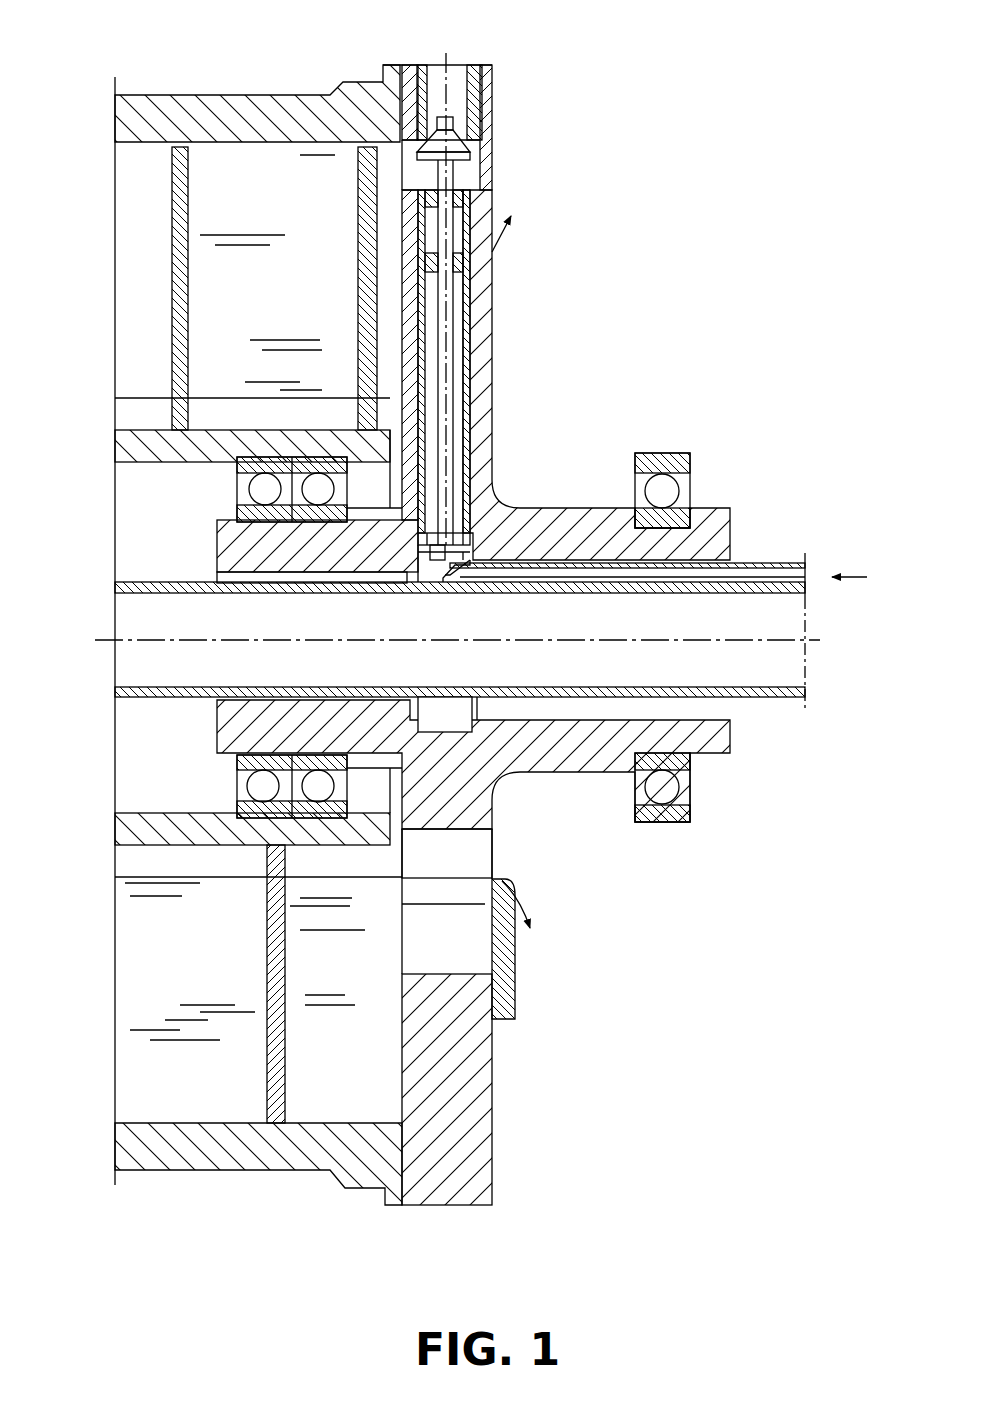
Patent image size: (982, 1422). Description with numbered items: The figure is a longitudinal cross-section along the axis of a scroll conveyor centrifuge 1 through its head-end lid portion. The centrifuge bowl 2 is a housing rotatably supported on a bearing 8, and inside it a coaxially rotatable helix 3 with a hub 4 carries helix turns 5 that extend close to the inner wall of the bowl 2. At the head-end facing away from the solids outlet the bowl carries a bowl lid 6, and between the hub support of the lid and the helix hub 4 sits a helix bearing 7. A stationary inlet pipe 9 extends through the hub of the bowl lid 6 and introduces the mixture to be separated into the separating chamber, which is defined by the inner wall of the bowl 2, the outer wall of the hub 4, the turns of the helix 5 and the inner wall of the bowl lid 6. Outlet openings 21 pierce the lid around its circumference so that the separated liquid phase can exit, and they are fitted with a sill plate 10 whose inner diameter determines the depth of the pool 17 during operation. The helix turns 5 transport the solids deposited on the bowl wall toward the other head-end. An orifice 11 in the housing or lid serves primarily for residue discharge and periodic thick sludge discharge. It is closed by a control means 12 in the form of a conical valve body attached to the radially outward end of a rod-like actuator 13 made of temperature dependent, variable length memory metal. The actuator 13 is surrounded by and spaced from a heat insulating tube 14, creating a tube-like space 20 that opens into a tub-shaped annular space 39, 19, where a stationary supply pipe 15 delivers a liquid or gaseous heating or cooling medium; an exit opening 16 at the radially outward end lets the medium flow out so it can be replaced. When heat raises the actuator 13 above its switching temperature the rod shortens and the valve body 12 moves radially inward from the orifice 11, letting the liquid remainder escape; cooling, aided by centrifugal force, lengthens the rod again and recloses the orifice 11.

The scroll conveyor centrifuge 1 is at (621, 314).
The centrifuge bowl 2 is at (232, 108).
The helix 3 is at (146, 292).
The hub 4 is at (145, 443).
The helix turns 5 is at (178, 333).
The bowl lid 6 is at (483, 412).
The helix bearing 7 is at (237, 475).
The bearing 8 is at (692, 465).
The inlet pipe 9 is at (775, 688).
The sill plate 10 is at (505, 954).
The orifice 11 is at (457, 75).
The control means 12 is at (456, 142).
The actuator 13 is at (447, 338).
The tube 14 is at (468, 370).
The supply pipe 15 is at (752, 575).
The exit opening 16 is at (485, 265).
The pool 17 is at (277, 220).
The tub-shaped annular space 19 is at (465, 538).
The tube-like space 20 is at (460, 305).
The outlet openings 21 is at (479, 857).
The tub-shaped annular space 39 is at (430, 575).